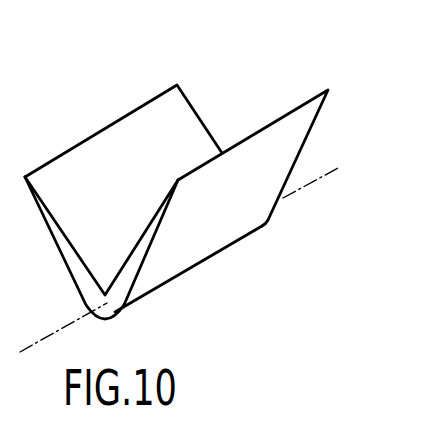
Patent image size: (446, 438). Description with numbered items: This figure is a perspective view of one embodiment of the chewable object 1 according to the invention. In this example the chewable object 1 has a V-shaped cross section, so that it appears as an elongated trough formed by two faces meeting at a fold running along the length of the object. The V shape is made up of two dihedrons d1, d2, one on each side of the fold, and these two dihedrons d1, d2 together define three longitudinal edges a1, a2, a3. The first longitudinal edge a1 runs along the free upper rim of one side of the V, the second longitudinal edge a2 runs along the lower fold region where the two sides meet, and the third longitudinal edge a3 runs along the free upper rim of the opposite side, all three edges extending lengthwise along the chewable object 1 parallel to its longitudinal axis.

The chewable object 1 is at (130, 78).
The longitudinal edge a1 is at (88, 139).
The longitudinal edge a2 is at (227, 246).
The longitudinal edge a3 is at (280, 118).
The dihedron d1 is at (51, 238).
The dihedron d2 is at (149, 258).